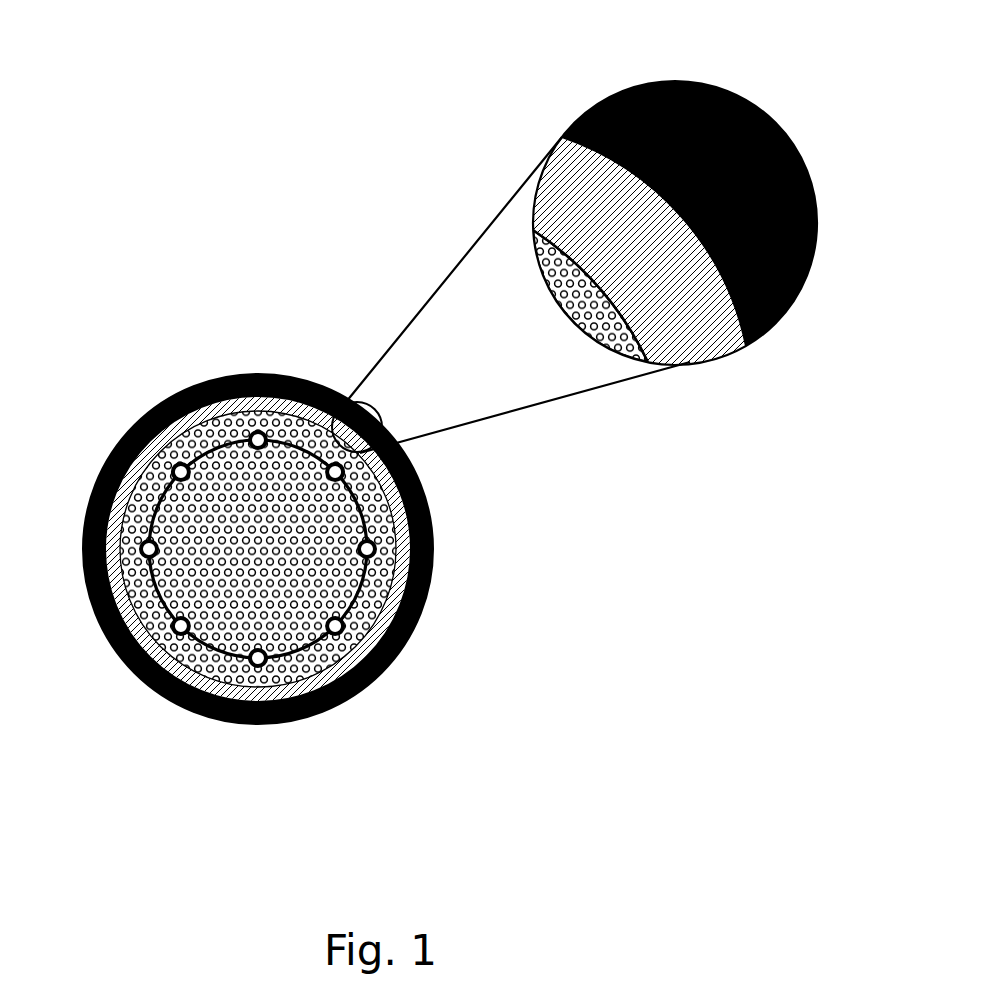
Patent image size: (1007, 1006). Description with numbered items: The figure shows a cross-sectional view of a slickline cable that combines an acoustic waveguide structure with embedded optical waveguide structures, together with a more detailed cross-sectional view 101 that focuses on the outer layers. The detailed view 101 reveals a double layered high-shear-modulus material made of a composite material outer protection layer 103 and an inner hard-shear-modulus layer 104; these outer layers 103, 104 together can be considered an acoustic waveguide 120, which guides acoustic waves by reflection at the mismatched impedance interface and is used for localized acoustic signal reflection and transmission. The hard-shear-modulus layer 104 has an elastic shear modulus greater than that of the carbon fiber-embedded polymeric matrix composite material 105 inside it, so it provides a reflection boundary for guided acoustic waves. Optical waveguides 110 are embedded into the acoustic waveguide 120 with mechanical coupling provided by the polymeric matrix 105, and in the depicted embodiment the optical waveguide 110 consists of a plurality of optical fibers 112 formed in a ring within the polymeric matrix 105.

The detailed cross-sectional view 101 is at (569, 66).
The composite material outer protection layer 103 is at (730, 90).
The inner hard-shear-modulus layer 104 is at (713, 340).
The composite material 105 is at (215, 427).
The optical waveguide 110 is at (363, 583).
The optical fibers 112 is at (345, 625).
The acoustic waveguide 120 is at (178, 698).